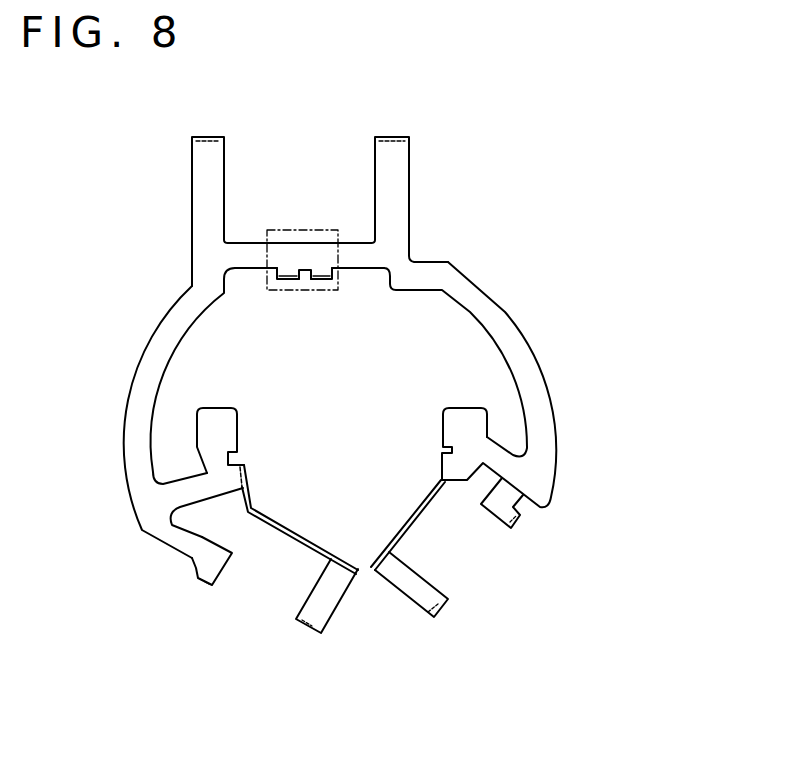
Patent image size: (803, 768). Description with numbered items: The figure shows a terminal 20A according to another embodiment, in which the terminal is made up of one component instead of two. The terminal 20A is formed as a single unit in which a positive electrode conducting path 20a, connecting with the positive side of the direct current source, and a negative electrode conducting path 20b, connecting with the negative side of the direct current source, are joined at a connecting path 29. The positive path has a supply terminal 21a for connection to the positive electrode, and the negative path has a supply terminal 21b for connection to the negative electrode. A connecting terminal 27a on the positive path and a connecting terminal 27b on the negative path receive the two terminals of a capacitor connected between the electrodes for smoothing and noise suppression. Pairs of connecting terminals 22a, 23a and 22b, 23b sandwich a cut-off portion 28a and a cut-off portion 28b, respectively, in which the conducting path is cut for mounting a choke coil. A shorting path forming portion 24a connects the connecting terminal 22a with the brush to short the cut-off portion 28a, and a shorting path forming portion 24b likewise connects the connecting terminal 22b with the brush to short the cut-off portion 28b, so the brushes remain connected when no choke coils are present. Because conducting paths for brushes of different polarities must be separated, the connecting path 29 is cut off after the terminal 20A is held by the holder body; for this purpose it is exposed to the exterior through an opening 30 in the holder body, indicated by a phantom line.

The terminal 20A is at (568, 220).
The positive electrode conducting path 20a is at (533, 367).
The negative electrode conducting path 20b is at (150, 385).
The supply terminal 21a is at (392, 133).
The supply terminal 21b is at (210, 135).
The connecting terminal 22a is at (517, 522).
The connecting terminal 22b is at (212, 582).
The connecting terminal 23a is at (445, 603).
The connecting terminal 23b is at (303, 633).
The shorting path forming portion 24a is at (498, 457).
The shorting path forming portion 24b is at (187, 485).
The connecting terminal 27a is at (320, 280).
The connecting terminal 27b is at (287, 280).
The cut-off portion 28a is at (460, 555).
The cut-off portion 28b is at (258, 593).
The connecting path 29 is at (305, 260).
The opening 30 is at (317, 230).